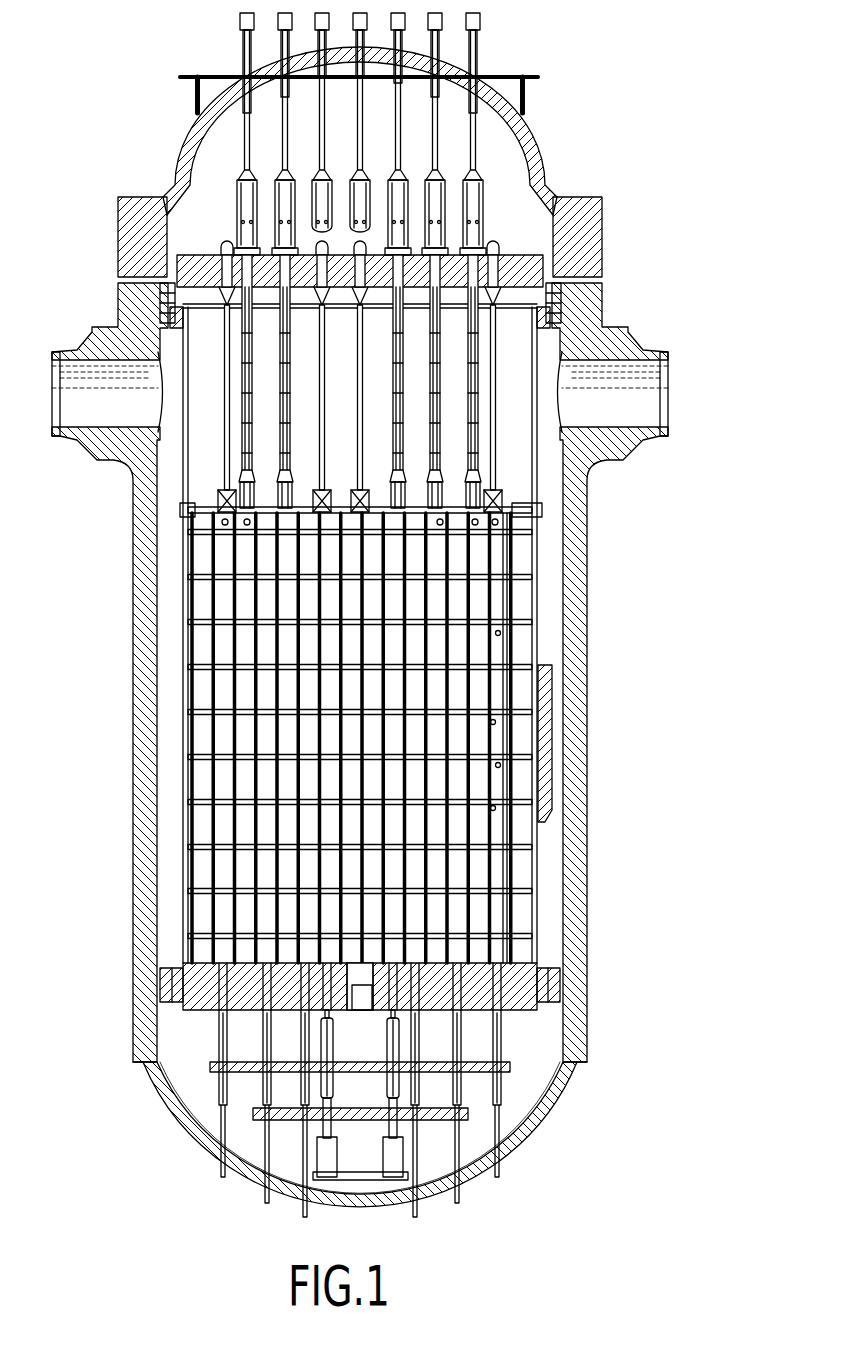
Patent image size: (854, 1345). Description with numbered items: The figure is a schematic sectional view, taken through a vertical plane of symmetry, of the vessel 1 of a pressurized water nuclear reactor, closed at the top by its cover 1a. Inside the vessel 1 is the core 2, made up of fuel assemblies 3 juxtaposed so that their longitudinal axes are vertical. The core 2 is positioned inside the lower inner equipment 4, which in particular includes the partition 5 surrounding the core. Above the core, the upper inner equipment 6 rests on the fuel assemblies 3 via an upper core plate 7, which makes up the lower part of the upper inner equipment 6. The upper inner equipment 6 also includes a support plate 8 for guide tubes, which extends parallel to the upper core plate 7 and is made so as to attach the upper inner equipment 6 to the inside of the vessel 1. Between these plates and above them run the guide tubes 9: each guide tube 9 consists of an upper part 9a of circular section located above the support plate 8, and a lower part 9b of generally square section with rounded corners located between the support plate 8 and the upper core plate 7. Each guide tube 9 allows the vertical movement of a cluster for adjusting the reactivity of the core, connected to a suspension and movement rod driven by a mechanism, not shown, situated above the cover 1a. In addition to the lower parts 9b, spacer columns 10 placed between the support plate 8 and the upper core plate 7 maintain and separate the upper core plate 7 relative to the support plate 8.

The vessel 1 is at (580, 703).
The cover 1a is at (527, 130).
The core 2 is at (480, 863).
The fuel assemblies 3 is at (235, 770).
The lower inner equipment 4 is at (540, 641).
The partition 5 is at (230, 853).
The upper inner equipment 6 is at (511, 333).
The upper core plate 7 is at (182, 510).
The support plate 8 is at (522, 270).
The guide tubes 9 is at (245, 400).
The upper part 9a is at (245, 203).
The lower part 9b is at (240, 441).
The spacer columns 10 is at (112, 330).